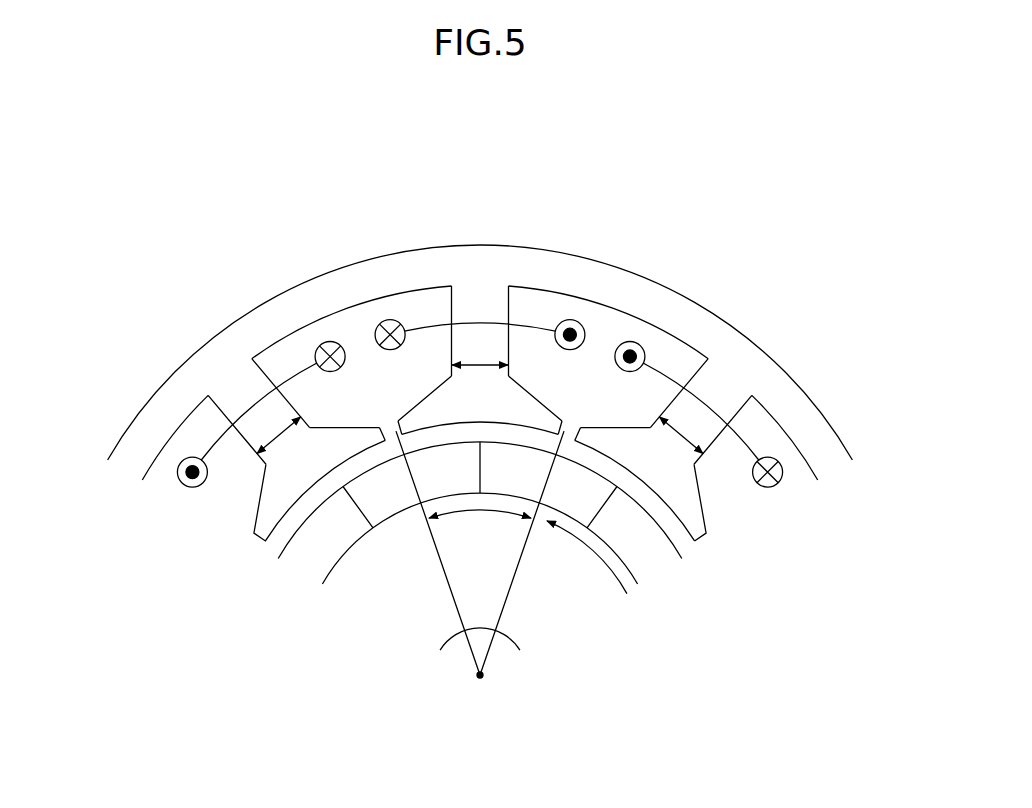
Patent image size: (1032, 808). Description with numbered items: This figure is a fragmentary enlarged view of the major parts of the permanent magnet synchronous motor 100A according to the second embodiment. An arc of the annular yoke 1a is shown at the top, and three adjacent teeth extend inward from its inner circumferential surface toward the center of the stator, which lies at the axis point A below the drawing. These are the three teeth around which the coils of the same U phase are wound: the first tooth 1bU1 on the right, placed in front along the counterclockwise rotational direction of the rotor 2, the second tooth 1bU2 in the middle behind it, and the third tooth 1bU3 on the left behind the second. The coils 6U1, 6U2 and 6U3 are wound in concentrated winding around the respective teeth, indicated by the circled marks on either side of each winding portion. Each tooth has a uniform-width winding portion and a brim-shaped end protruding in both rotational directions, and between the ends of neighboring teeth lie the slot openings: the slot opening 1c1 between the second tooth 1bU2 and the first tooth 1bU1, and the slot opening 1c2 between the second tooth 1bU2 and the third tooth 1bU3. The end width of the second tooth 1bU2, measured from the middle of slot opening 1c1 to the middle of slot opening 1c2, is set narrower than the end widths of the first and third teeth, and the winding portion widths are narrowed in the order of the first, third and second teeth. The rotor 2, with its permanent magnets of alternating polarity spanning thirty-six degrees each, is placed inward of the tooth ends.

The permanent magnet synchronous motor 100A is at (505, 146).
The yoke 1a is at (605, 260).
The first tooth 1bU1 is at (723, 477).
The second tooth 1bU2 is at (607, 408).
The third tooth 1bU3 is at (234, 474).
The slot opening 1c1 is at (571, 424).
The slot opening 1c2 is at (392, 412).
The coil 6U1 is at (748, 443).
The coil 6U2 is at (524, 325).
The coil 6U3 is at (300, 370).
The rotor 2 is at (387, 600).
The rotation axis A is at (480, 681).